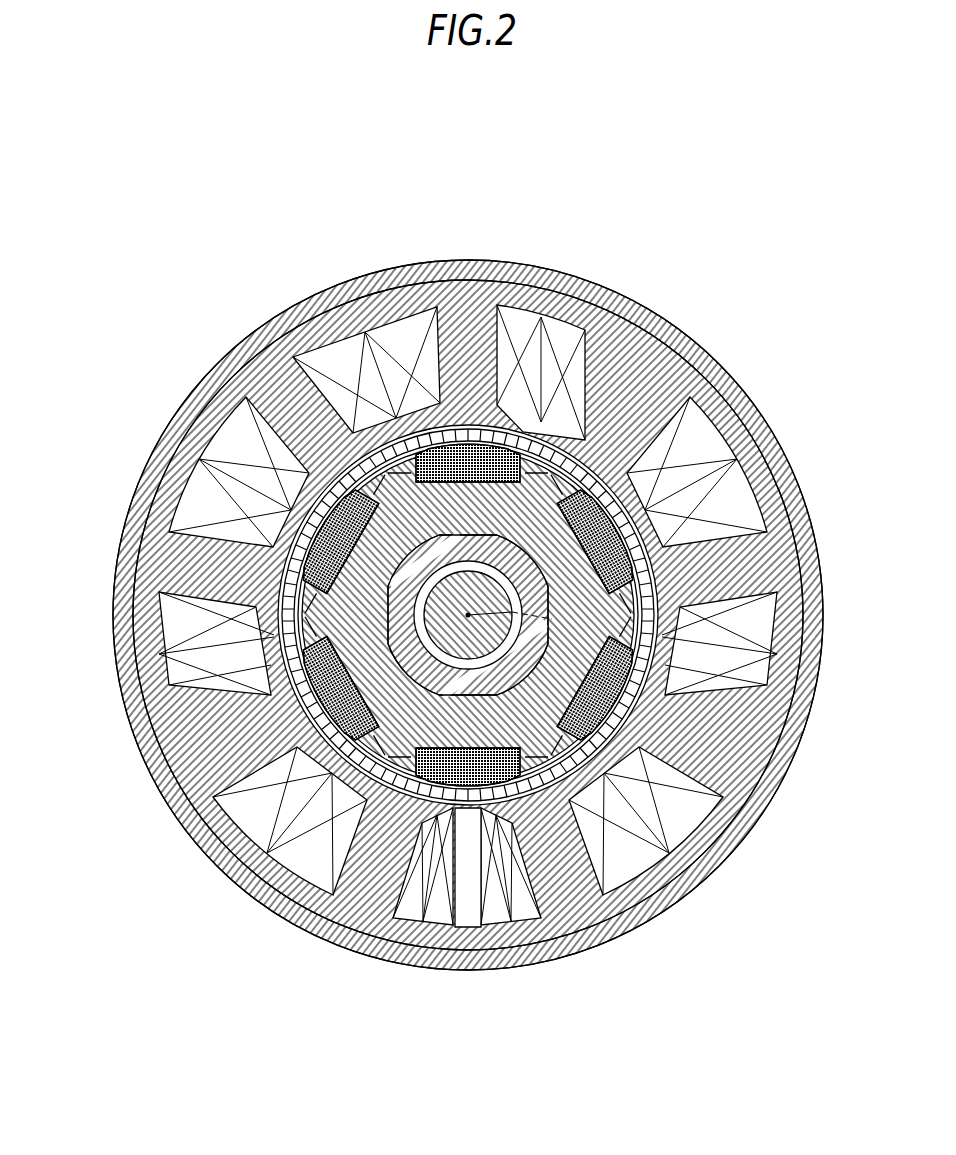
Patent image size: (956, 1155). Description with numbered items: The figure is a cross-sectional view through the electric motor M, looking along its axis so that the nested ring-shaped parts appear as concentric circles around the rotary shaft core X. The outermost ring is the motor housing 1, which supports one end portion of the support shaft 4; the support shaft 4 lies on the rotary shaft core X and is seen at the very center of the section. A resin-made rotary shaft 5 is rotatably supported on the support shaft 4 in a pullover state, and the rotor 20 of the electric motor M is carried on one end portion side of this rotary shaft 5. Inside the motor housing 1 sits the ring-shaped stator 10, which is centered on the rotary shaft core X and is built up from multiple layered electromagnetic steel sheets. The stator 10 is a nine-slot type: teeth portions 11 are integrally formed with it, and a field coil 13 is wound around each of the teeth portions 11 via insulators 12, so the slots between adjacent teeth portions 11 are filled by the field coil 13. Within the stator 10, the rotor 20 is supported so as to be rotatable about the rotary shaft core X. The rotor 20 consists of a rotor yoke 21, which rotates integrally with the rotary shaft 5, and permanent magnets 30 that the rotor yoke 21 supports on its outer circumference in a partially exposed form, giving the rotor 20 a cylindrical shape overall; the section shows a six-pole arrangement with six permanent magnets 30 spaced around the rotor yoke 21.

The motor housing 1 is at (350, 962).
The support shaft 4 is at (410, 617).
The rotary shaft 5 is at (490, 553).
The stator 10 is at (474, 604).
The teeth portions 11 is at (480, 320).
The insulators 12 is at (468, 615).
The field coil 13 is at (400, 330).
The rotor 20 is at (538, 606).
The rotor yoke 21 is at (508, 977).
The permanent magnets 30 is at (467, 444).
The electric motor M is at (735, 294).
The rotary shaft core X is at (519, 617).